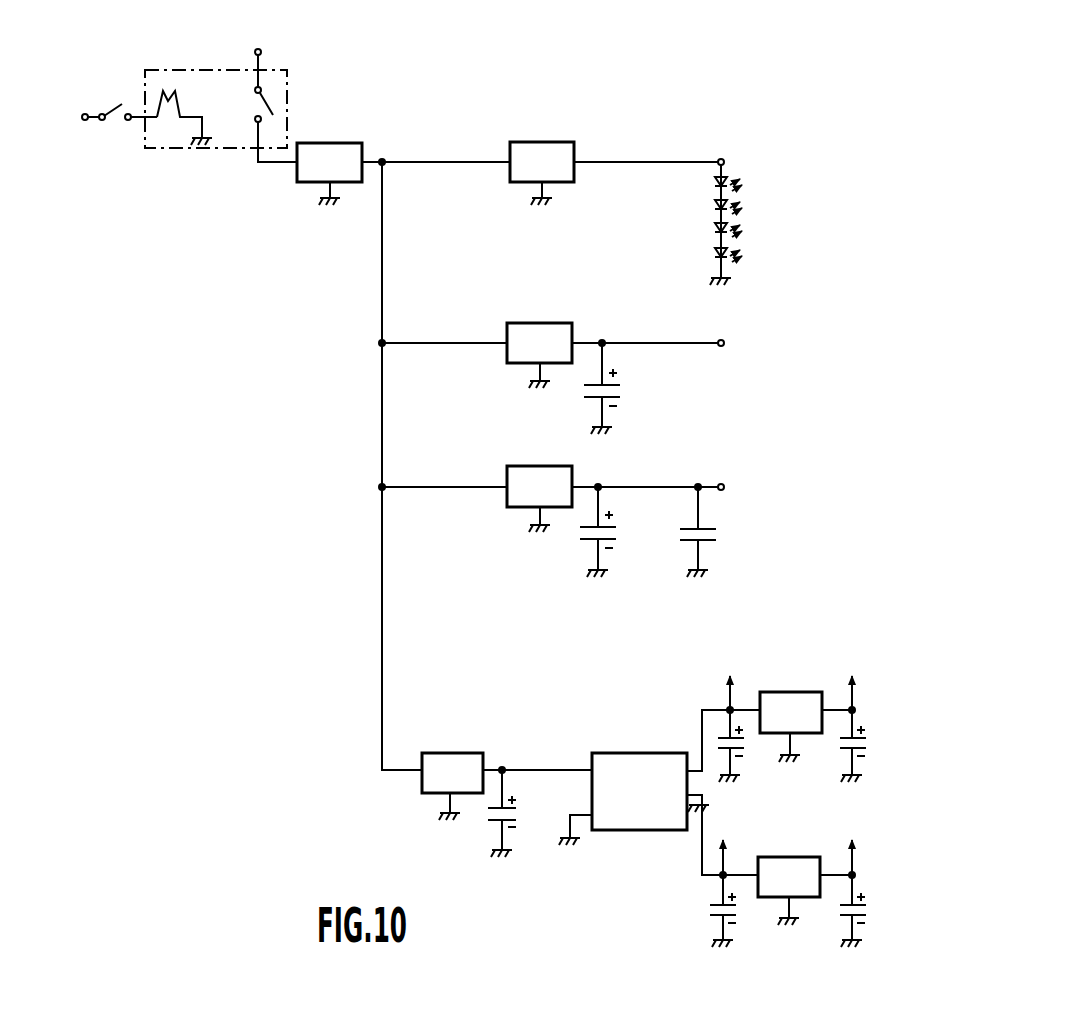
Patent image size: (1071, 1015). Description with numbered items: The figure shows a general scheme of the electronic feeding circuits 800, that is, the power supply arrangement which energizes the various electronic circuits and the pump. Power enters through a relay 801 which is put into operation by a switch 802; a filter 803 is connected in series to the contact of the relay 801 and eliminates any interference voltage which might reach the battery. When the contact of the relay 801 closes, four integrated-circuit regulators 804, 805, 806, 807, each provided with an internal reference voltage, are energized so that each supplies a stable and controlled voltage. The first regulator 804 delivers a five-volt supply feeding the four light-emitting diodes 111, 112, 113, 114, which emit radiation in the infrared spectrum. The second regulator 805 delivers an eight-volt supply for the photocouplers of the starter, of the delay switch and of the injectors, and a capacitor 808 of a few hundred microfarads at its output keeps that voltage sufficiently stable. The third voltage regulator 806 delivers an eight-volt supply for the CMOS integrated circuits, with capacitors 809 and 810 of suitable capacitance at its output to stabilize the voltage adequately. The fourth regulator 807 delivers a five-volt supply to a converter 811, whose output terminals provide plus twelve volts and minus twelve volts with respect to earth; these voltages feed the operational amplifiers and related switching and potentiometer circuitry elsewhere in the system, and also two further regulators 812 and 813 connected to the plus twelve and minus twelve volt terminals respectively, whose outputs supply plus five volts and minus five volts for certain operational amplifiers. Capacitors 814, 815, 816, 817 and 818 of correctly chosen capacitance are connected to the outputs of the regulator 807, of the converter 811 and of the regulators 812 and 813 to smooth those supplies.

The electronic feeding circuits 800 is at (492, 78).
The relay 801 is at (291, 98).
The switch 802 is at (118, 124).
The filter 803 is at (329, 174).
The first regulator 804 is at (542, 173).
The second regulator 805 is at (539, 355).
The third voltage regulator 806 is at (539, 499).
The fourth regulator 807 is at (452, 786).
The capacitor 808 is at (626, 390).
The capacitor 809 is at (576, 542).
The capacitor 810 is at (722, 537).
The converter 811 is at (636, 815).
The regulator 812 is at (791, 692).
The regulator 813 is at (812, 869).
The capacitor 814 is at (493, 828).
The capacitor 815 is at (723, 730).
The capacitor 816 is at (709, 911).
The capacitor 817 is at (841, 752).
The capacitor 818 is at (841, 921).
The light-emitting diode 111 is at (713, 181).
The light-emitting diode 112 is at (735, 212).
The light-emitting diode 113 is at (728, 262).
The light-emitting diode 114 is at (713, 227).